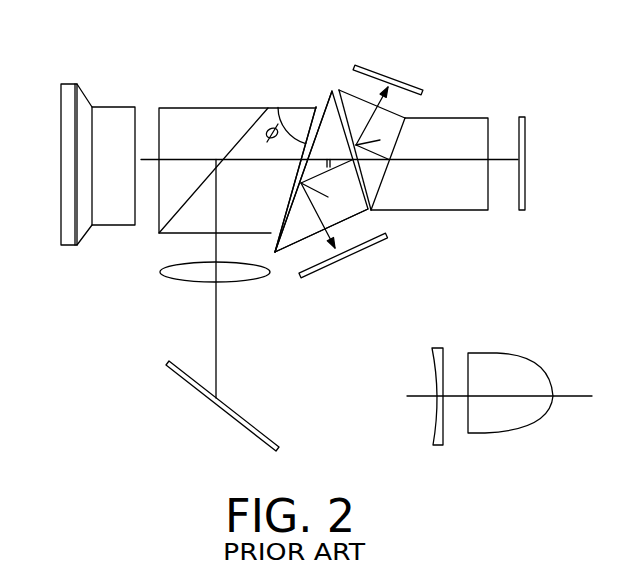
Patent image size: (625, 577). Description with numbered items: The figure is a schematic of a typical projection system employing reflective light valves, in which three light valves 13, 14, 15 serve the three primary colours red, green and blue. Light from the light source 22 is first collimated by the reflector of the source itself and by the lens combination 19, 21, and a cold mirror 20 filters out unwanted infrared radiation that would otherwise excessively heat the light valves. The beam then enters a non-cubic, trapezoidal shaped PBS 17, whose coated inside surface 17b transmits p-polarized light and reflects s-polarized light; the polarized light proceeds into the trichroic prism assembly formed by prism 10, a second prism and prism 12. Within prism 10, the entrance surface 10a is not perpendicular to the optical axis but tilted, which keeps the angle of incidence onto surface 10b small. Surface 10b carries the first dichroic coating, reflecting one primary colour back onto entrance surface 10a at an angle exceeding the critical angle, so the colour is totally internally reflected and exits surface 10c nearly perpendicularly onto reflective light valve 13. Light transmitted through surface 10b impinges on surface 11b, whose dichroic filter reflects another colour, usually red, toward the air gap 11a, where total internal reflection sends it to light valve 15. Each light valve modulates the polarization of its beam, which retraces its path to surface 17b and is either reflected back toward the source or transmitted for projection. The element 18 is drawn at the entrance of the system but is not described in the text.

The prism 10 is at (292, 233).
The entrance surface 10a is at (289, 203).
The surface 10b is at (316, 107).
The surface 10c is at (310, 238).
The air gap 11a is at (333, 80).
The surface 11b is at (407, 152).
The prism 12 is at (462, 195).
The light valve 13 is at (386, 240).
The light valve 14 is at (527, 183).
The light valve 15 is at (414, 83).
The PBS 17 is at (180, 118).
The inside surface 17b is at (187, 201).
The light source 18 is at (65, 177).
The lens 19 is at (190, 277).
The cold mirror 20 is at (250, 423).
The lens 21 is at (443, 358).
The light source 22 is at (517, 365).